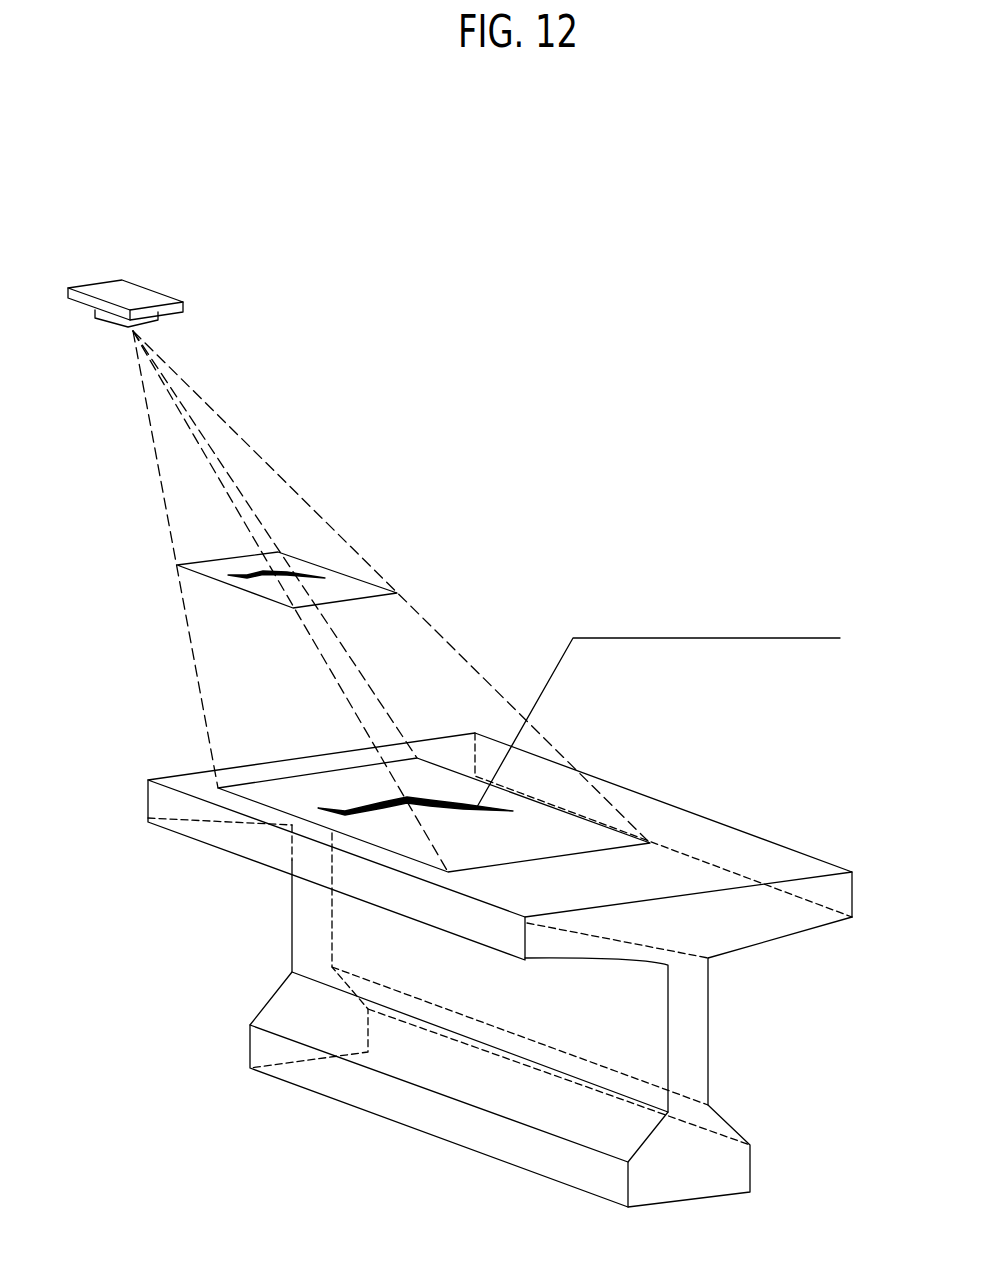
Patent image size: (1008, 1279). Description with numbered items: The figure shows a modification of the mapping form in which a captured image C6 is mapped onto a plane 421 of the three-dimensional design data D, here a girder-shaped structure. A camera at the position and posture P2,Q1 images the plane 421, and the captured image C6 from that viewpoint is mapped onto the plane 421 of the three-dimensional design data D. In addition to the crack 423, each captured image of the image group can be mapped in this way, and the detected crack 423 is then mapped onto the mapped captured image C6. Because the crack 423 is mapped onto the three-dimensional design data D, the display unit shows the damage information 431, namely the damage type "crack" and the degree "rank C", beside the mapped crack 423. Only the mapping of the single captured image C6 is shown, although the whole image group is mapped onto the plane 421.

The position and posture of the camera P2,Q1 is at (138, 297).
The crack 423 is at (337, 812).
The damage information 431 is at (768, 597).
The plane 421 is at (764, 857).
The three-dimensional design data D is at (686, 803).
The captured image C6 is at (400, 834).